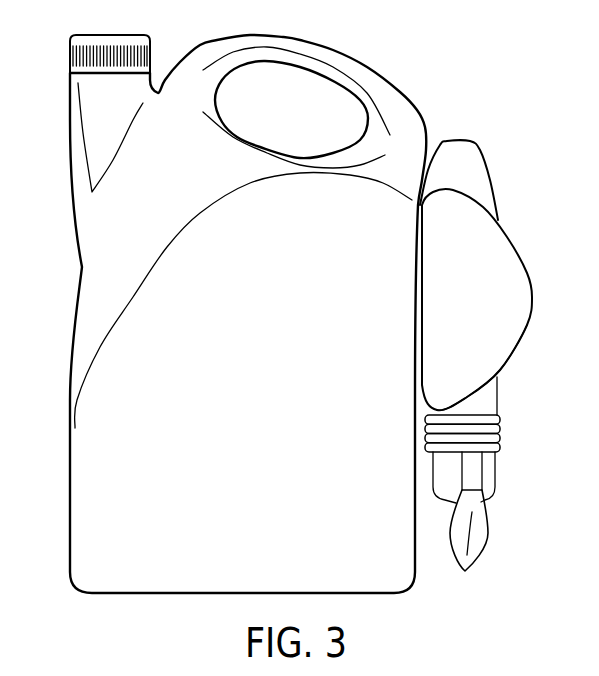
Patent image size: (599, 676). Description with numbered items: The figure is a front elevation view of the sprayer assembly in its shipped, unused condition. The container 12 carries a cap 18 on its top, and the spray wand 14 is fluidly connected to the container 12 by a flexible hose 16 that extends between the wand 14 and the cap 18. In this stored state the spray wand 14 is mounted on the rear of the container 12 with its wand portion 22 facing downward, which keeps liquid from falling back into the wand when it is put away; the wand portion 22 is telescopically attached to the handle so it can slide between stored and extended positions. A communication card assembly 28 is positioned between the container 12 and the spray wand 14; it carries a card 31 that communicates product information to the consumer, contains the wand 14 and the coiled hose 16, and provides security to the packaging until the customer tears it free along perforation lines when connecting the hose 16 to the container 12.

The container 12 is at (80, 475).
The spray wand 14 is at (493, 317).
The flexible hose 16 is at (487, 442).
The cap 18 is at (80, 44).
The wand portion 22 is at (478, 503).
The communication card assembly 28 is at (510, 266).
The card 31 is at (490, 353).